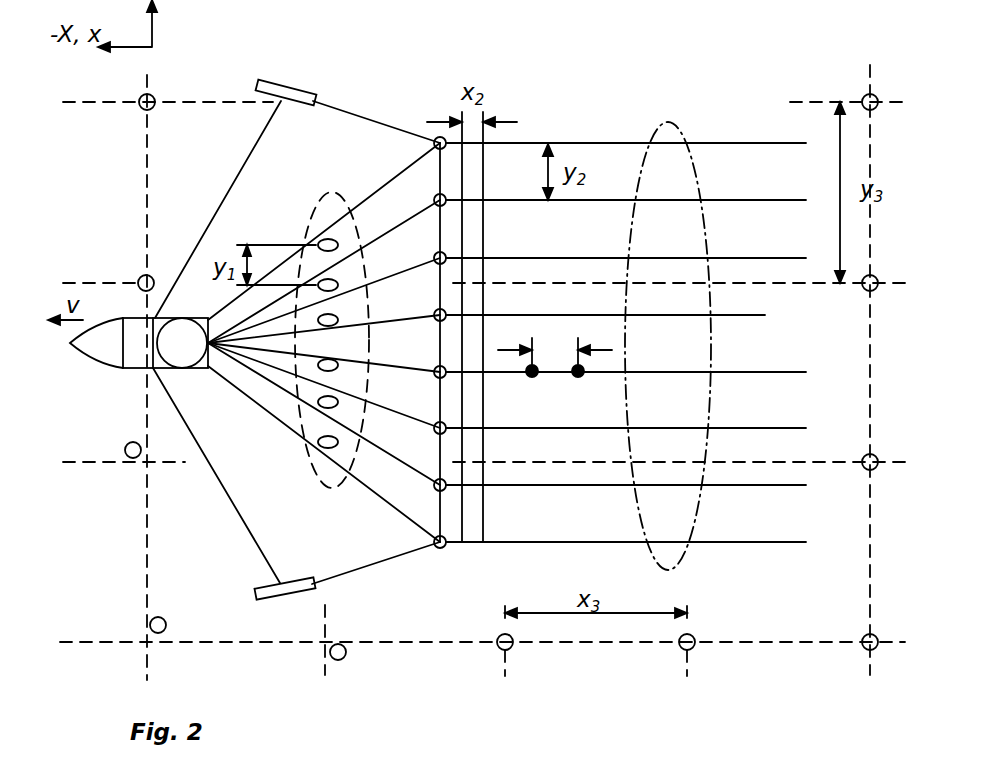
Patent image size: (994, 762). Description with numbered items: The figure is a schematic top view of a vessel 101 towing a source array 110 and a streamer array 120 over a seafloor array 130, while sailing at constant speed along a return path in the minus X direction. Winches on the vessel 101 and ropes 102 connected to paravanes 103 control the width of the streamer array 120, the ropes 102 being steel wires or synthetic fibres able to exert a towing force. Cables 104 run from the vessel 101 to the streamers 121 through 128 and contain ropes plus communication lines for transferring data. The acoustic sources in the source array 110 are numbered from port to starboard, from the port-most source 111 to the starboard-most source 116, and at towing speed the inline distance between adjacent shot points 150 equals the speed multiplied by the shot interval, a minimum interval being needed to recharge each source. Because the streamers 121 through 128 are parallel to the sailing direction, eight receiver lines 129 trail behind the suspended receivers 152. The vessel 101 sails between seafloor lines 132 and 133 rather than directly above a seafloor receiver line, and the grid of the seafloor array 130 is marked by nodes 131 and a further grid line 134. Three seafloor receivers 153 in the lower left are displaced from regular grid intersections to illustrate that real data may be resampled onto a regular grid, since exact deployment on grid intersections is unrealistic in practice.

The vessel 101 is at (132, 369).
The ropes 102 is at (222, 493).
The paravanes 103 is at (297, 92).
The cables 104 is at (382, 192).
The source array 110 is at (328, 480).
The acoustic source 111 is at (340, 445).
The acoustic source 116 is at (340, 244).
The streamer array 120 is at (665, 123).
The streamer 121 is at (708, 143).
The streamer 128 is at (708, 545).
The receiver lines 129 is at (778, 371).
The seafloor array 130 is at (161, 191).
The grid node 131 is at (173, 100).
The seafloor line 132 is at (121, 282).
The seafloor line 133 is at (122, 463).
The grid line 134 is at (116, 640).
The shot points 150 is at (534, 377).
The suspended receivers 152 is at (441, 549).
The seafloor receivers 153 is at (161, 622).